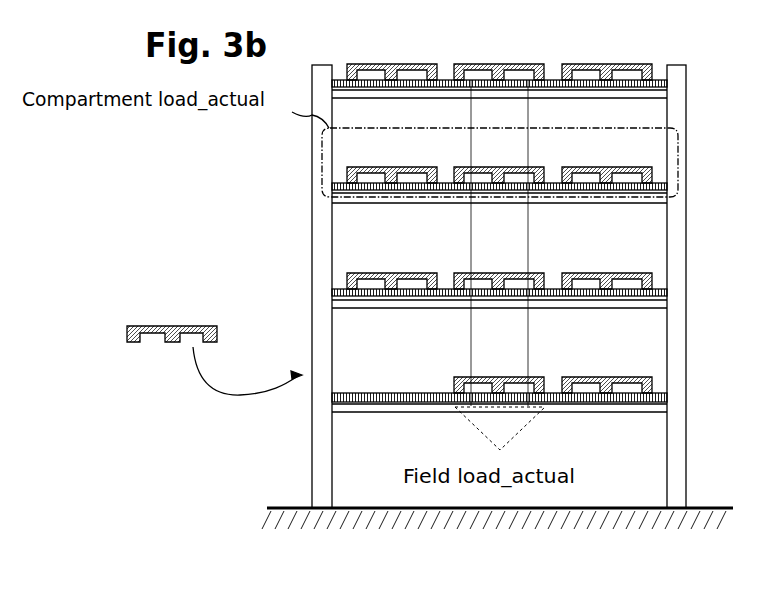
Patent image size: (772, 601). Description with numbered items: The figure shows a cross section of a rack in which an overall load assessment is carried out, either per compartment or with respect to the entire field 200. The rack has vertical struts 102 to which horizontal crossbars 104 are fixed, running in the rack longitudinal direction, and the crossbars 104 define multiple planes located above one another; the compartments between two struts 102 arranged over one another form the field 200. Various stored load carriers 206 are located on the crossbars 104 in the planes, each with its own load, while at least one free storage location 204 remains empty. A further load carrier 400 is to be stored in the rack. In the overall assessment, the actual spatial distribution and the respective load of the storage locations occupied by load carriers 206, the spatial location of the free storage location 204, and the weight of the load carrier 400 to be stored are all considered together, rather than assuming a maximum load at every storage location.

The field 200 is at (665, 540).
The strut 102 is at (680, 335).
The crossbar 104 is at (630, 85).
The free storage location 204 is at (360, 387).
The load carrier 206 is at (638, 64).
The load carrier to be stored 400 is at (153, 325).